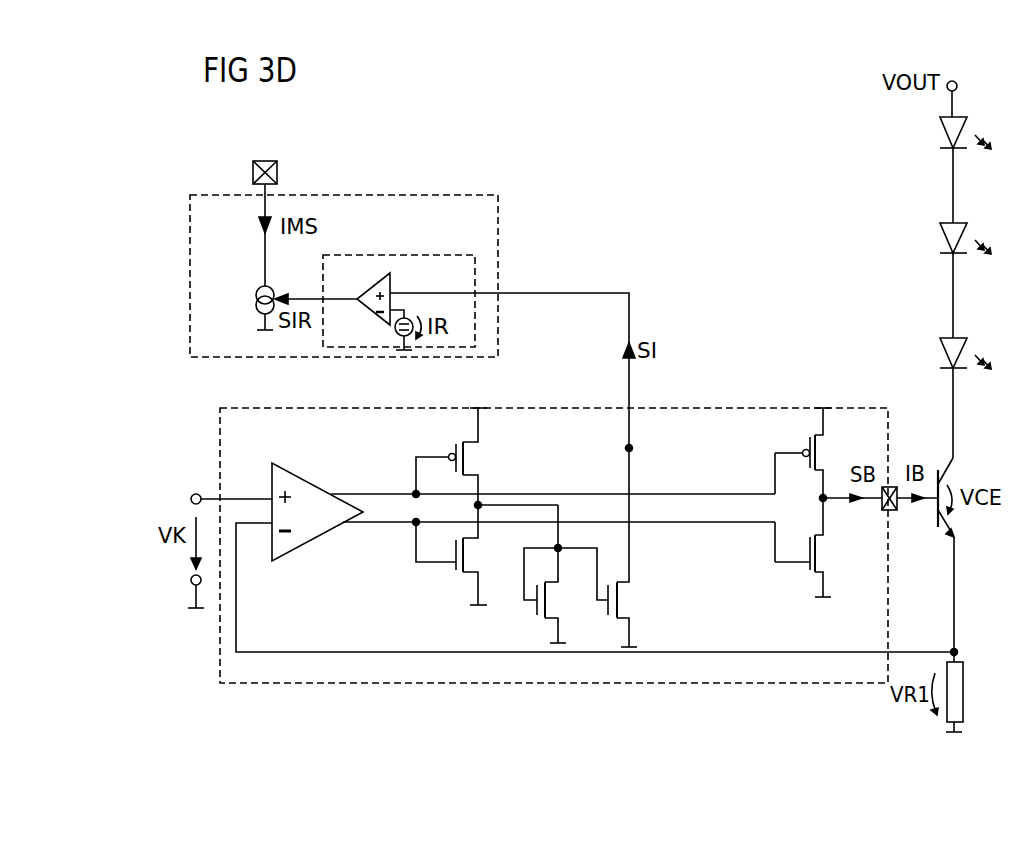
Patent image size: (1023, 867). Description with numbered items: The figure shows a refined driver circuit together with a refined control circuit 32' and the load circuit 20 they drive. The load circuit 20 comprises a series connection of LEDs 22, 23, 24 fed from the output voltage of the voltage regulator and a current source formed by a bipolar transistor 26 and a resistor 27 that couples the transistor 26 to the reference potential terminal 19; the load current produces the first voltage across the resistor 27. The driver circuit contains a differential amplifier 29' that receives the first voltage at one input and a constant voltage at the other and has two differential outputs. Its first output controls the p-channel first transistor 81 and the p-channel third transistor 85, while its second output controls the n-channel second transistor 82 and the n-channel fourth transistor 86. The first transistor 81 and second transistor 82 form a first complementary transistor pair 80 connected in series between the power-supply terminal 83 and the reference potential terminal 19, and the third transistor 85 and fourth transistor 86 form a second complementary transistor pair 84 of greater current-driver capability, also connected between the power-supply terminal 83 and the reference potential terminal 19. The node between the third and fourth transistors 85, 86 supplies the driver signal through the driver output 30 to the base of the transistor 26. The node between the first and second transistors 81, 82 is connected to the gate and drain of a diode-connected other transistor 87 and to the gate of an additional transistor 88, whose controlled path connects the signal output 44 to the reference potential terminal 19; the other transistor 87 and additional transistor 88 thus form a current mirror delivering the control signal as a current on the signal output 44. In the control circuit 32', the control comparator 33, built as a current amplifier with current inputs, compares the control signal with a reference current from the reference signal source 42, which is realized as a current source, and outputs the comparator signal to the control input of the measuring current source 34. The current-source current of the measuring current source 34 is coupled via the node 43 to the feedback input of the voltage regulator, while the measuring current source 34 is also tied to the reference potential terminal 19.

The reference potential terminal 19 is at (257, 331).
The load circuit 20 is at (954, 72).
The LED 22 is at (943, 132).
The LED 23 is at (943, 240).
The LED 24 is at (943, 353).
The transistor 26 is at (956, 462).
The resistor 27 is at (965, 689).
The differential amplifier 29' is at (317, 501).
The driver output 30 is at (884, 512).
The control circuit 32' is at (344, 259).
The control comparator 33 is at (381, 284).
The measuring current source 34 is at (256, 297).
The reference signal source 42 is at (409, 318).
The node 43 is at (278, 172).
The signal output 44 is at (633, 446).
The first complementary transistor pair 80 is at (452, 529).
The first transistor 81 is at (449, 455).
The second transistor 82 is at (482, 612).
The power-supply terminal 83 is at (475, 411).
The second complementary transistor pair 84 is at (809, 527).
The third transistor 85 is at (805, 449).
The fourth transistor 86 is at (809, 553).
The other transistor 87 is at (535, 608).
The additional transistor 88 is at (607, 608).